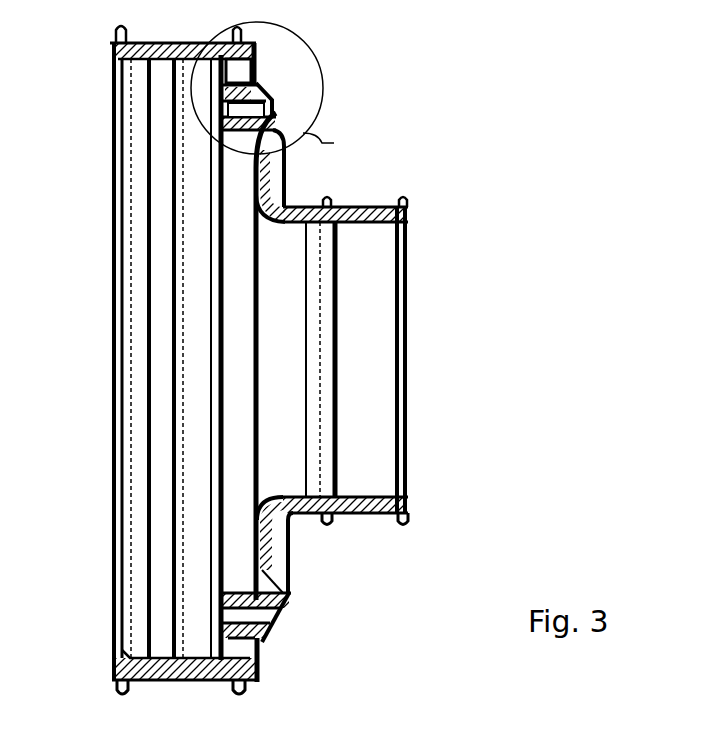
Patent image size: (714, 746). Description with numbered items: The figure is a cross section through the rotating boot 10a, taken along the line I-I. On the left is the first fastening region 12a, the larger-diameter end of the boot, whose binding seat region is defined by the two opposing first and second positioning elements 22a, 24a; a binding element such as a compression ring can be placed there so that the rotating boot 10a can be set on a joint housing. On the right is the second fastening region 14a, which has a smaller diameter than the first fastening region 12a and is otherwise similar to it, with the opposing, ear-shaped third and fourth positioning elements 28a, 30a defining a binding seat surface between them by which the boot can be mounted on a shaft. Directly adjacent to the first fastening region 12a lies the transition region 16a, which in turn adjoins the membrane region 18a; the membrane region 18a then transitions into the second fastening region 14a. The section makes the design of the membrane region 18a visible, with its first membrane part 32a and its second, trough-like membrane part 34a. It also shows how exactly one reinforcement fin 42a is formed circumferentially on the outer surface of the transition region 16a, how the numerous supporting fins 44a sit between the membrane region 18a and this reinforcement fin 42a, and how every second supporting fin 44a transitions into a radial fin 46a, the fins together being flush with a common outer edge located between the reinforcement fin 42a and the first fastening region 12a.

The rotating boot 10a is at (503, 120).
The first fastening region 12a is at (160, 40).
The second fastening region 14a is at (384, 201).
The transition region 16a is at (297, 74).
The membrane region 18a is at (377, 134).
The first positioning element 22a is at (117, 688).
The second positioning element 24a is at (235, 687).
The third positioning element 28a is at (407, 518).
The fourth positioning element 30a is at (335, 518).
The first membrane part 32a is at (268, 614).
The second membrane part 34a is at (275, 550).
The reinforcement fin 42a is at (262, 88).
The supporting fins 44a is at (275, 112).
The radial fins 46a is at (258, 660).